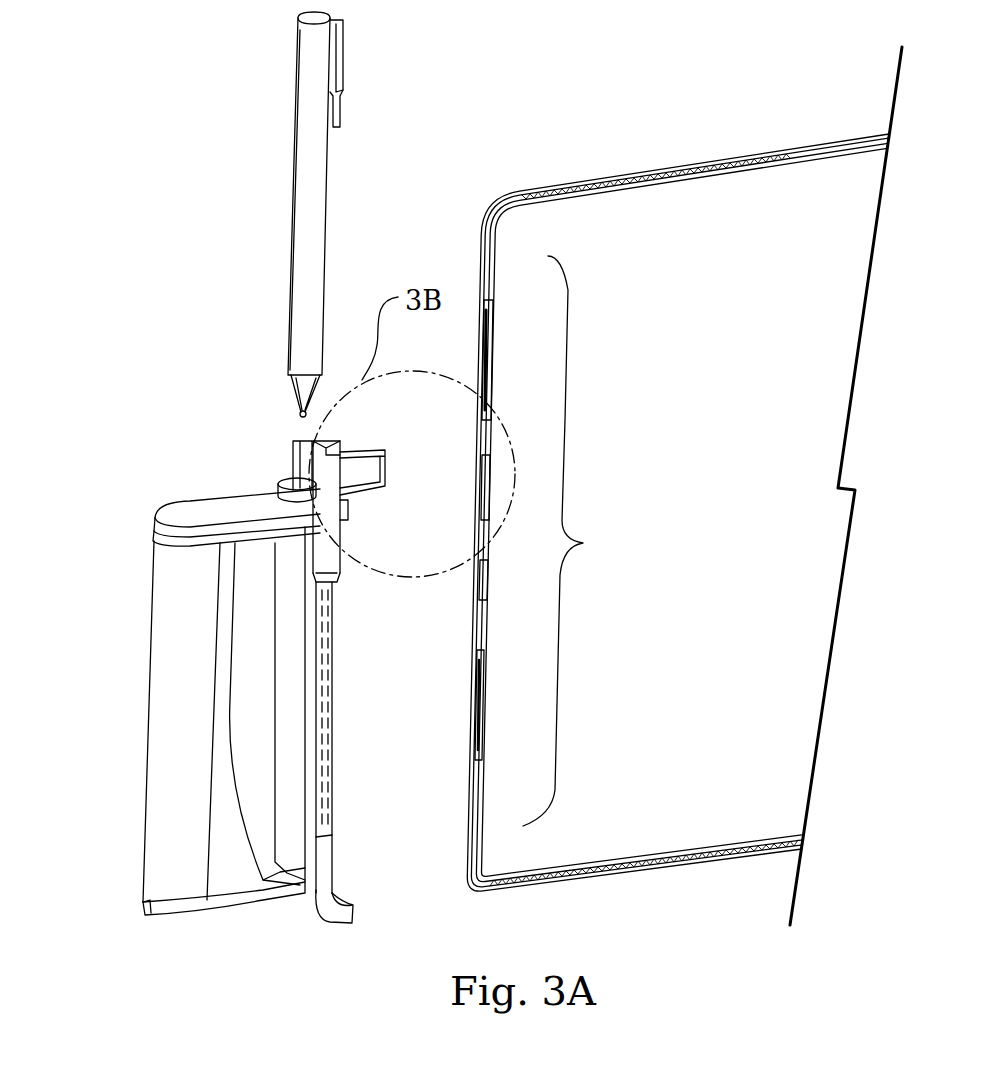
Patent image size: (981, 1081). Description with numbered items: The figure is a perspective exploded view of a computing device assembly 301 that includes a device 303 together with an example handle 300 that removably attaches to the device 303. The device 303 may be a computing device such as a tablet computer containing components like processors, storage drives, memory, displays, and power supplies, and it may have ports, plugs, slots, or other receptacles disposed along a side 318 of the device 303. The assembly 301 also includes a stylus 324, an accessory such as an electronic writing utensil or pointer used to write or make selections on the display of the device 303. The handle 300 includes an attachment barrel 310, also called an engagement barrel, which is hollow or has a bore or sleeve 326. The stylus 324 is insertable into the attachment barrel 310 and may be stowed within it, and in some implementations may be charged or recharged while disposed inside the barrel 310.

The computing device assembly 301 is at (133, 82).
The stylus 324 is at (302, 148).
The bore or sleeve 326 is at (285, 481).
The handle 300 is at (120, 529).
The attachment barrel 310 is at (302, 676).
The device 303 is at (733, 318).
The side 318 is at (583, 543).